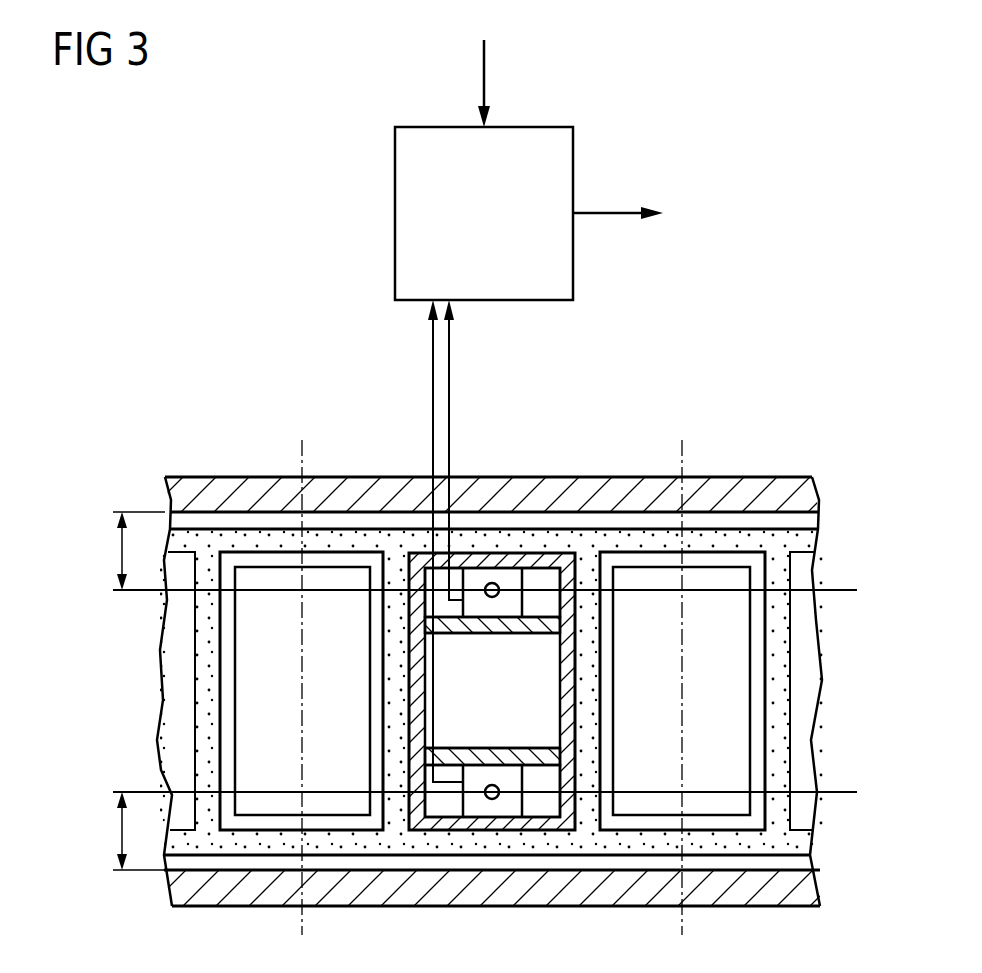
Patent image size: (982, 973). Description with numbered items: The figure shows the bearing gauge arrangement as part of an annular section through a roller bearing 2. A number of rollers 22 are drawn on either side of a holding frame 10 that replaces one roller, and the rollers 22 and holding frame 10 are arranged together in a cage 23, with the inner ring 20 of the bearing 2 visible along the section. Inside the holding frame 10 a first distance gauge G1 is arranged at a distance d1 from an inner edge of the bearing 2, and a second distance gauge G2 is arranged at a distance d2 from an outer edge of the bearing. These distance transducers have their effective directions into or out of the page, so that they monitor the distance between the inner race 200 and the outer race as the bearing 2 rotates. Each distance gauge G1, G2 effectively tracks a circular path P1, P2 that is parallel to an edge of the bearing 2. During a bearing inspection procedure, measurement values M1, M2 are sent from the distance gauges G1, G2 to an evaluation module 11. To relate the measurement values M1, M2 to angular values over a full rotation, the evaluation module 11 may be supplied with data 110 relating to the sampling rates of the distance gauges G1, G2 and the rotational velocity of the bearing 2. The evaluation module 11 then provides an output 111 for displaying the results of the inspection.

The roller bearing 2 is at (752, 434).
The holding frame 10 is at (545, 823).
The evaluation module 11 is at (546, 127).
The data 110 is at (484, 77).
The output 111 is at (613, 213).
The inner ring 20 is at (314, 477).
The roller 22 is at (262, 711).
The cage 23 is at (805, 543).
The inner race 200 is at (510, 690).
The first distance gauge G1 is at (506, 582).
The second distance gauge G2 is at (473, 803).
The measurement value M1 is at (433, 381).
The measurement value M2 is at (449, 385).
The circular path P1 is at (852, 592).
The circular path P2 is at (845, 792).
The distance d1 is at (121, 831).
The distance d2 is at (121, 551).